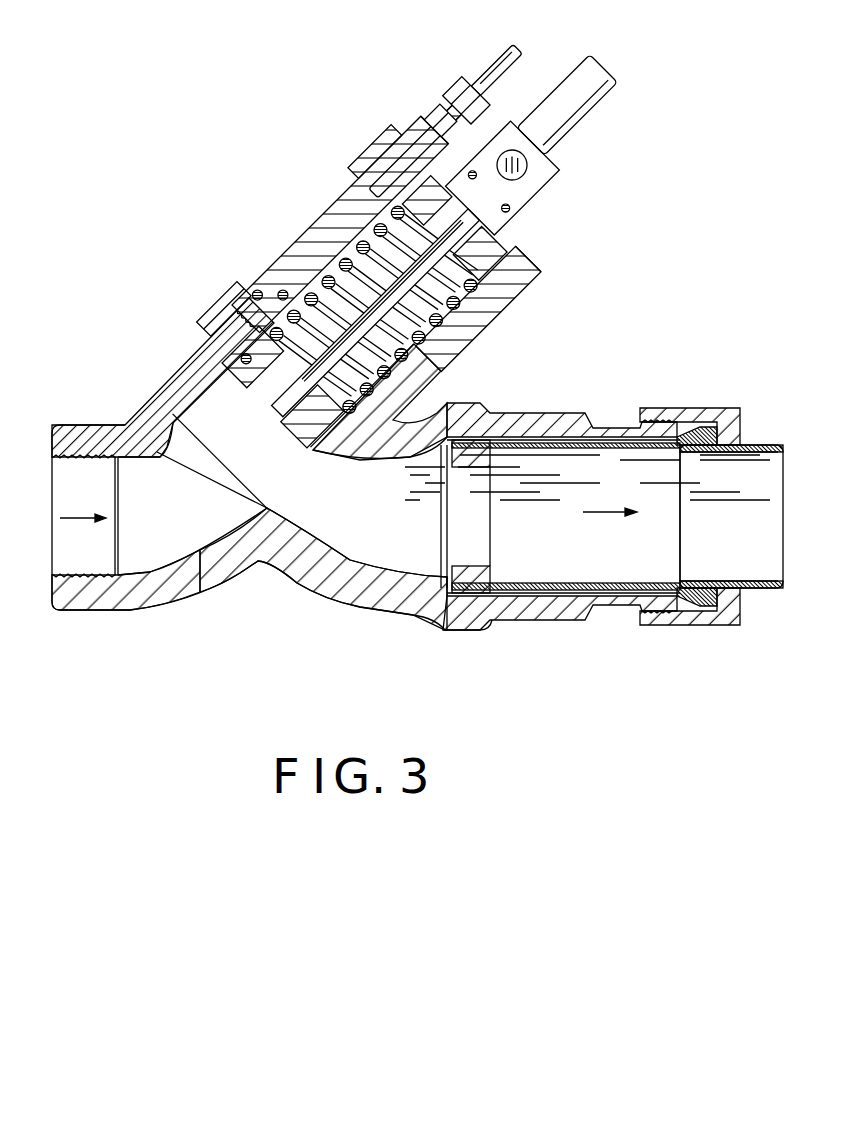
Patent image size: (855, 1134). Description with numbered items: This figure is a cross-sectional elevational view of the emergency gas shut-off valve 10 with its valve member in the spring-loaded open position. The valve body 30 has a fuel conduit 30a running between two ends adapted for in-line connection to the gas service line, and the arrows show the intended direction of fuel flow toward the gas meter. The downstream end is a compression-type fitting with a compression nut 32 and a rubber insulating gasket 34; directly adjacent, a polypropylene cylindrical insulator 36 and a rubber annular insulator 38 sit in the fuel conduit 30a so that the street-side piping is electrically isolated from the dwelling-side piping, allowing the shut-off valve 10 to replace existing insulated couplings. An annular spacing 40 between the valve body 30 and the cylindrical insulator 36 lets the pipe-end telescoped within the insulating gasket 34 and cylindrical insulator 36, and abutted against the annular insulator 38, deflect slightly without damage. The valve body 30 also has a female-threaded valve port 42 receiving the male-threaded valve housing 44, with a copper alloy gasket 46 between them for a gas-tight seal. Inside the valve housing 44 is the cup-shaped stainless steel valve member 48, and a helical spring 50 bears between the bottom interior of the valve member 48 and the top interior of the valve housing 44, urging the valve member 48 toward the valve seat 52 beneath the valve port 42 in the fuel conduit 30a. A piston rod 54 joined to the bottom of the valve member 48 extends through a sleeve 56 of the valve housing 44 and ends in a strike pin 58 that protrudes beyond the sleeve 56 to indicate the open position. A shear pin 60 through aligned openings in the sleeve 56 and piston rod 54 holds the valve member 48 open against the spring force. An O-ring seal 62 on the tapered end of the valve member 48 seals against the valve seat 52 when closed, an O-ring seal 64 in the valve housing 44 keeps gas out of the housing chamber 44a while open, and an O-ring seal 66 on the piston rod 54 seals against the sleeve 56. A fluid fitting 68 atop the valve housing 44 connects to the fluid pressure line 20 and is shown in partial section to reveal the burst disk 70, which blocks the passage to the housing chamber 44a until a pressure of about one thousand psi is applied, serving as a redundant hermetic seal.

The emergency gas shut-off valve 10 is at (272, 172).
The fluid pressure line 20 is at (488, 72).
The valve body 30 is at (207, 580).
The fuel conduit 30a is at (183, 522).
The compression nut 32 is at (690, 627).
The insulating gasket 34 is at (752, 590).
The cylindrical insulator 36 is at (537, 592).
The annular insulator 38 is at (437, 617).
The annular spacing 40 is at (520, 435).
The valve port 42 is at (228, 288).
The valve housing 44 is at (292, 255).
The housing chamber 44a is at (373, 178).
The gasket 46 is at (254, 292).
The valve member 48 is at (446, 330).
The helical spring 50 is at (497, 277).
The valve seat 52 is at (176, 412).
The piston rod 54 is at (487, 225).
The sleeve 56 is at (510, 125).
The strike pin 58 is at (596, 120).
The shear pin 60 is at (530, 165).
The O-ring seal 62 is at (244, 357).
The O-ring seal 64 is at (268, 290).
The O-ring seal 66 is at (530, 197).
The fluid fitting 68 is at (455, 105).
The burst disk 70 is at (428, 118).